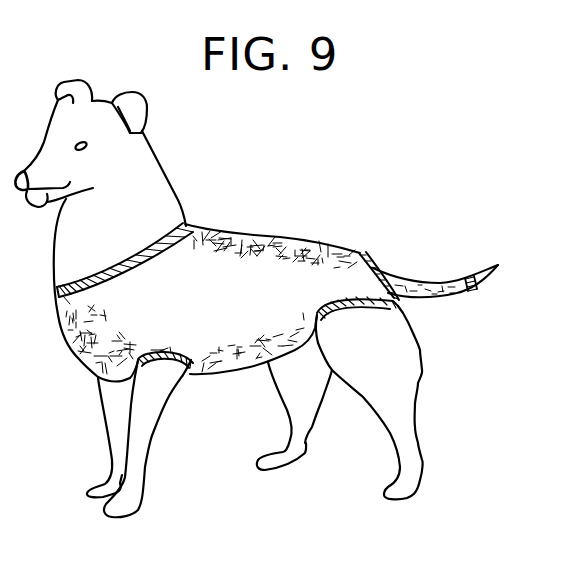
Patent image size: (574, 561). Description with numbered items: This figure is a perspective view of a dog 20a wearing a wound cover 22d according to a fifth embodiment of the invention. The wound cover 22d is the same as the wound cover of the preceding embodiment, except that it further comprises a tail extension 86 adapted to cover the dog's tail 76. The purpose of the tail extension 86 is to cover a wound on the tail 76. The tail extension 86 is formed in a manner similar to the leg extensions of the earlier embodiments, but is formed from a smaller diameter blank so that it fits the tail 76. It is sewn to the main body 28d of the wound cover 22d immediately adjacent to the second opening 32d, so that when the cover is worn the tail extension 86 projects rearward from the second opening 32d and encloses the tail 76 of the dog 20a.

The dog wearing garment 20a is at (188, 168).
The wound cover 22d is at (273, 227).
The main body 28d is at (312, 258).
The second opening 32d is at (384, 262).
The tail 76 is at (486, 263).
The tail extension 86 is at (444, 283).